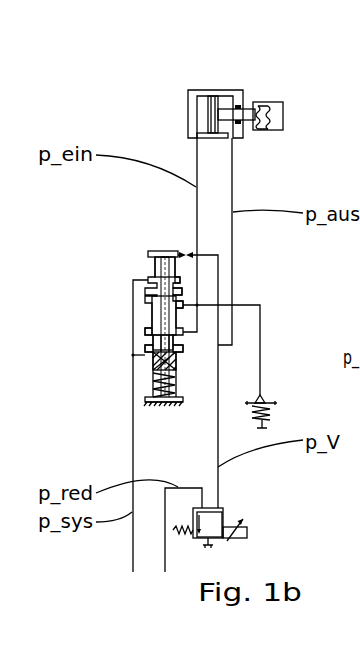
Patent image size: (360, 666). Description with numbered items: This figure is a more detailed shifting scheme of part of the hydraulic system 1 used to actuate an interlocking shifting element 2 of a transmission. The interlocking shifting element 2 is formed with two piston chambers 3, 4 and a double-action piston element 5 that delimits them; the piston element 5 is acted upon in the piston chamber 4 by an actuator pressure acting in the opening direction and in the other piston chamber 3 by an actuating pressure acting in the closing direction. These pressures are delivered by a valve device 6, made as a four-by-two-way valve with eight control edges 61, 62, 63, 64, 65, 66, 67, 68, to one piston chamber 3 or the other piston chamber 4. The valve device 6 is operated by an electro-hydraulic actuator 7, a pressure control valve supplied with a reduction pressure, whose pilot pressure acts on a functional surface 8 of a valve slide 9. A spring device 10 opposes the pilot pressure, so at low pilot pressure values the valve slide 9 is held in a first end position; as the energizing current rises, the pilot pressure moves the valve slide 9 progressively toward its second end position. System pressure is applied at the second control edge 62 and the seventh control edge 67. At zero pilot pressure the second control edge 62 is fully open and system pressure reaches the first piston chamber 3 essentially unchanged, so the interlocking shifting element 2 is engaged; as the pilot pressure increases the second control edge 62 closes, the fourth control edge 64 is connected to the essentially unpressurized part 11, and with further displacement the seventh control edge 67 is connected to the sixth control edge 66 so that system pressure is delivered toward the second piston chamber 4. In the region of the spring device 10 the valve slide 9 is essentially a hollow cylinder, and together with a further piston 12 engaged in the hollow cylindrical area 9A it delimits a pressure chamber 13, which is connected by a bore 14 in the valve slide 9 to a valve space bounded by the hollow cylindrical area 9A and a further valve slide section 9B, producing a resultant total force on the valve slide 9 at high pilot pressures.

The hydraulic system 1 is at (142, 115).
The interlocking shifting element 2 is at (292, 100).
The piston chamber 3 is at (199, 103).
The piston chamber 4 is at (233, 100).
The double-action piston element 5 is at (213, 97).
The valve device 6 is at (130, 262).
The first control edge 61 is at (150, 251).
The second control edge 62 is at (180, 280).
The third control edge 63 is at (181, 291).
The fourth control edge 64 is at (183, 305).
The fifth control edge 65 is at (148, 333).
The sixth control edge 66 is at (150, 344).
The seventh control edge 67 is at (156, 360).
The eighth control edge 68 is at (153, 397).
The electro-hydraulic actuator 7 is at (165, 538).
The functional surface 8 is at (161, 252).
The valve slide 9 is at (158, 270).
The hollow cylindrical area 9A is at (177, 365).
The further valve slide section 9B is at (160, 318).
The spring device 10 is at (163, 392).
The essentially unpressurized part 11 is at (268, 422).
The further piston 12 is at (156, 403).
The pressure chamber 13 is at (180, 346).
The bore 14 is at (161, 362).